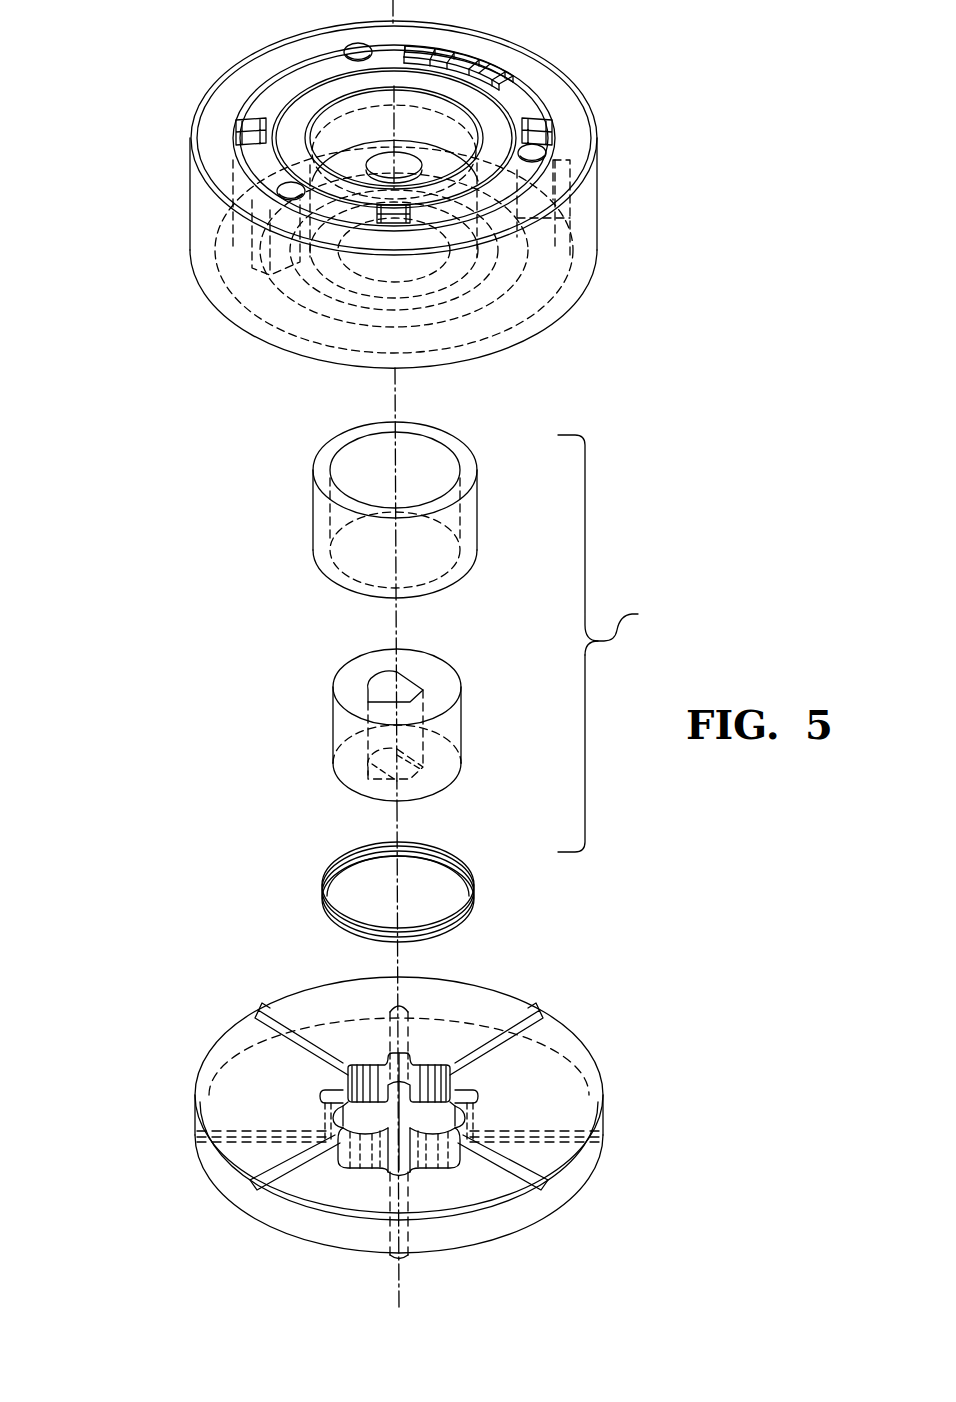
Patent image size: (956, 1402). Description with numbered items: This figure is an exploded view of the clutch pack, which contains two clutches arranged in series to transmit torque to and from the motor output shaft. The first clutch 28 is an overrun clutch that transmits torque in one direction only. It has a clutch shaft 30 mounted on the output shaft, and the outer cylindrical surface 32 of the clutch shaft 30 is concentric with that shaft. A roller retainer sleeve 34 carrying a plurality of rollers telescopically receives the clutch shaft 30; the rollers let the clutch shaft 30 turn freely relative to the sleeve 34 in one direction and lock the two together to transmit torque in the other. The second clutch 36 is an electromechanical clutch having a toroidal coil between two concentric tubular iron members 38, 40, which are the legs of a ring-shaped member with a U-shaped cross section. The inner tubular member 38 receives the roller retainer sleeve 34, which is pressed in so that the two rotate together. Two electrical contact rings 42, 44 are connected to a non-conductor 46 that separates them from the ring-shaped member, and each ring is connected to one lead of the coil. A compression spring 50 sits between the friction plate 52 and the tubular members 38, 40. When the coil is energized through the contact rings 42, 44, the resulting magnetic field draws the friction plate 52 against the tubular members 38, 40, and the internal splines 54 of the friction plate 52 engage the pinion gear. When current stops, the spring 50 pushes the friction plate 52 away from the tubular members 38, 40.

The first clutch 28 is at (614, 643).
The clutch shaft 30 is at (352, 673).
The outer cylindrical surface 32 is at (333, 725).
The roller retainer sleeve 34 is at (313, 509).
The second clutch 36 is at (190, 196).
The inner tubular member 38 is at (337, 313).
The outer tubular member 40 is at (217, 307).
The electrical contact ring 42 is at (302, 103).
The electrical contact ring 44 is at (215, 125).
The non-conductor 46 is at (580, 175).
The compression spring 50 is at (327, 902).
The friction plate 52 is at (285, 1003).
The internal splines 54 is at (320, 1097).